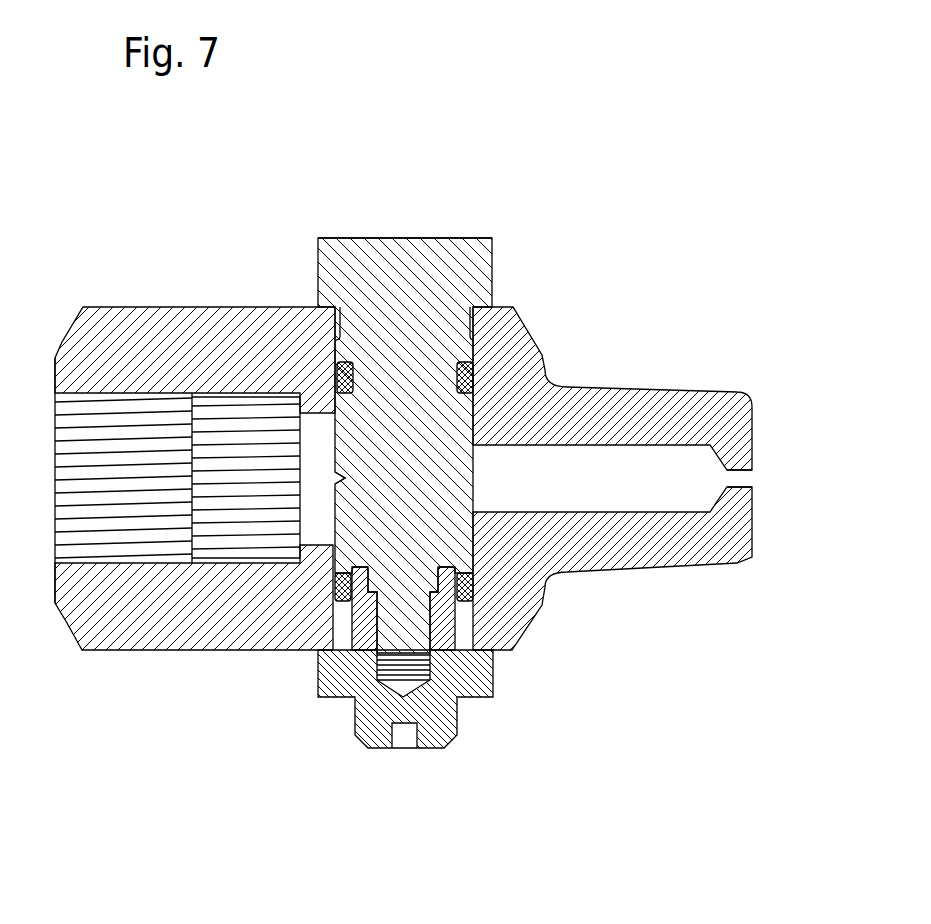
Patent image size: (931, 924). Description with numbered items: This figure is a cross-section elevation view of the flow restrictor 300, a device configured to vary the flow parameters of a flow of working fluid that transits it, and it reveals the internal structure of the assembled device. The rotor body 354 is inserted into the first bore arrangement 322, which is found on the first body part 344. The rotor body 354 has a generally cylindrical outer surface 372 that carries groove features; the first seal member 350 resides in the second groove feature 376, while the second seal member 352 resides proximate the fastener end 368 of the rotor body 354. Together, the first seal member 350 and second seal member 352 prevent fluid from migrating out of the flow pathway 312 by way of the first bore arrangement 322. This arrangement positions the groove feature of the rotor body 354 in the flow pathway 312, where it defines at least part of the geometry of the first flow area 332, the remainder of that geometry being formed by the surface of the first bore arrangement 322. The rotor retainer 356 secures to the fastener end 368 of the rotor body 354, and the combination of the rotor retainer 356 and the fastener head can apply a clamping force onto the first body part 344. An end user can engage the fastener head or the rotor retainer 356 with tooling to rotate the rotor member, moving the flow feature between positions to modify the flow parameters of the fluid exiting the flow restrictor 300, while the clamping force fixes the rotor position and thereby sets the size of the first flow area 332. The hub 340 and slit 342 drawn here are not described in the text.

The flow restrictor 300 is at (632, 243).
The flow pathway 312 is at (63, 182).
The first bore arrangement 322 is at (315, 222).
The first flow area 332 is at (312, 482).
The hub 340 is at (755, 478).
The slit 342 is at (788, 470).
The first body part 344 is at (127, 307).
The first seal member 350 is at (337, 362).
The second seal member 352 is at (332, 607).
The rotor body 354 is at (494, 237).
The rotor retainer 356 is at (480, 698).
The fastener end 368 is at (375, 648).
The outer surface 372 is at (340, 480).
The second groove feature 376 is at (480, 372).